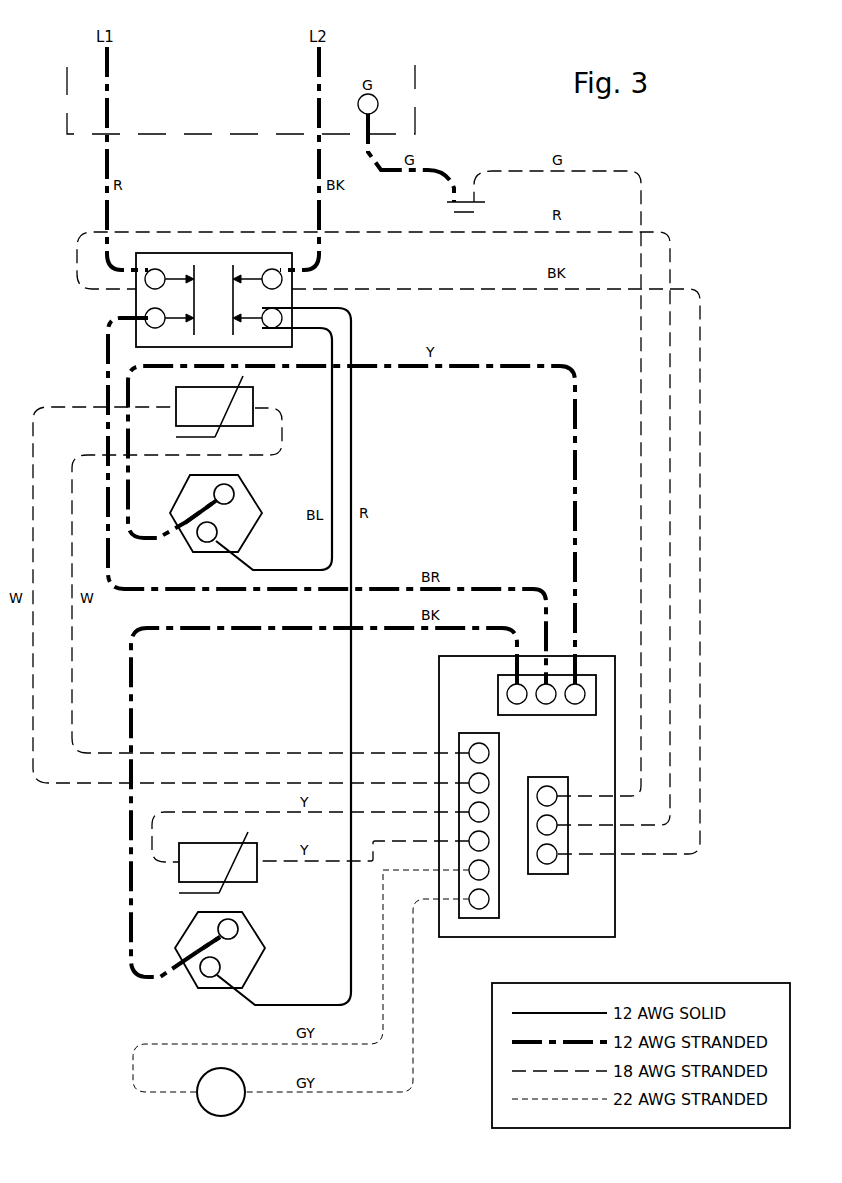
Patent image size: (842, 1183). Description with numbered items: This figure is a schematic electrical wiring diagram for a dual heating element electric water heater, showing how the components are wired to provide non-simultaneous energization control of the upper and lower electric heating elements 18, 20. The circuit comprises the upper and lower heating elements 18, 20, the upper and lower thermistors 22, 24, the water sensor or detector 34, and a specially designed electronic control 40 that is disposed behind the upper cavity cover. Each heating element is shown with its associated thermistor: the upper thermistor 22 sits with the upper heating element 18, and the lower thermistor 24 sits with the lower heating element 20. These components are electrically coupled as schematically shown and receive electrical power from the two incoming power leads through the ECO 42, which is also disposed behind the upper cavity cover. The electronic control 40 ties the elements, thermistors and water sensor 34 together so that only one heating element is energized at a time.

The ECO 42 is at (134, 298).
The upper thermistor 22 is at (254, 398).
The upper electric heating element 18 is at (252, 493).
The lower thermistor 24 is at (258, 873).
The lower electric heating element 20 is at (256, 963).
The electronic control 40 is at (615, 895).
The water sensor 34 is at (204, 1112).